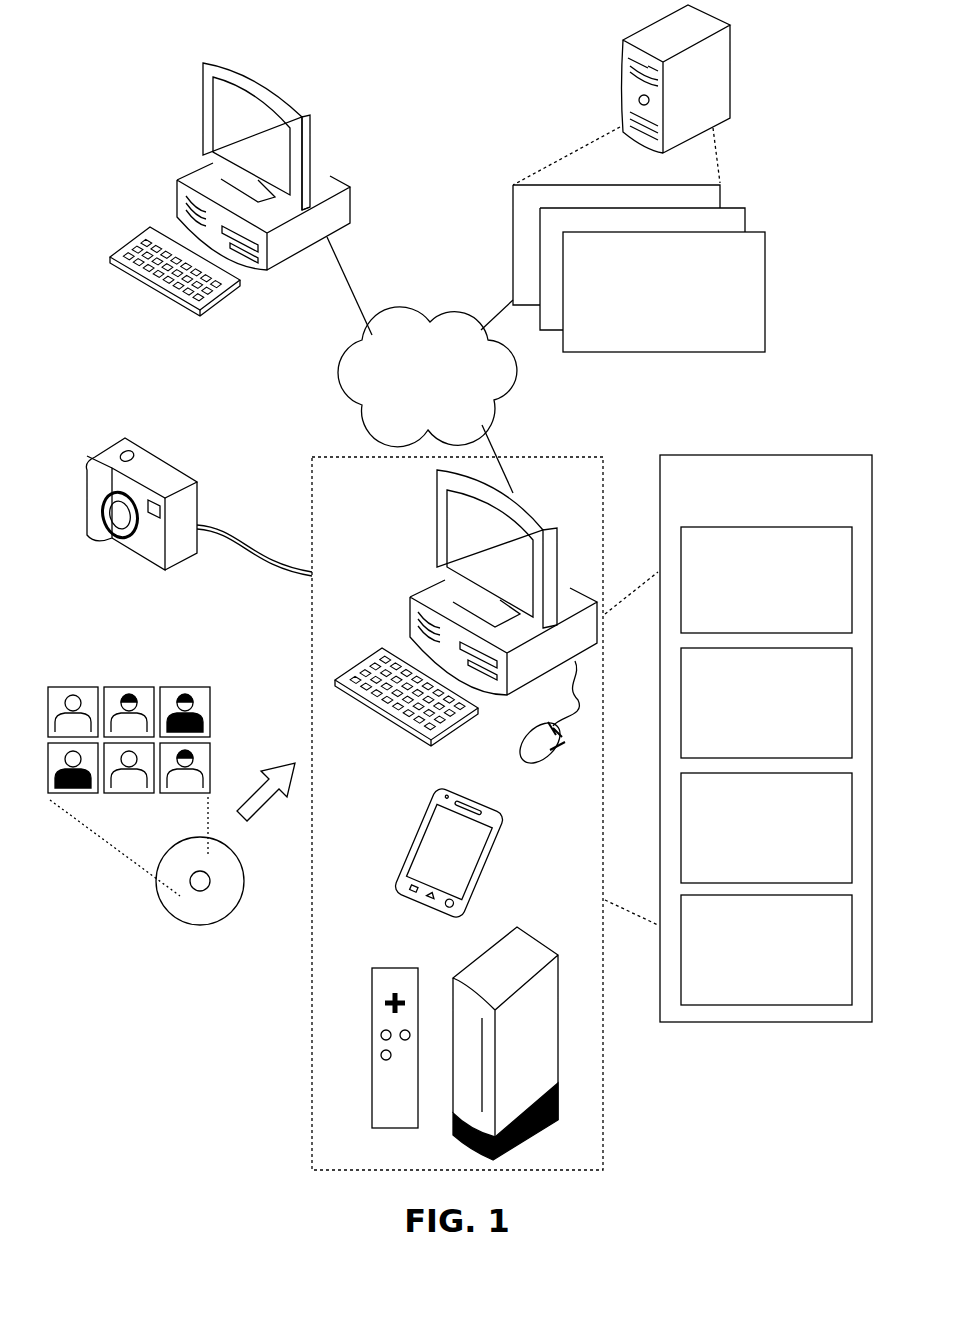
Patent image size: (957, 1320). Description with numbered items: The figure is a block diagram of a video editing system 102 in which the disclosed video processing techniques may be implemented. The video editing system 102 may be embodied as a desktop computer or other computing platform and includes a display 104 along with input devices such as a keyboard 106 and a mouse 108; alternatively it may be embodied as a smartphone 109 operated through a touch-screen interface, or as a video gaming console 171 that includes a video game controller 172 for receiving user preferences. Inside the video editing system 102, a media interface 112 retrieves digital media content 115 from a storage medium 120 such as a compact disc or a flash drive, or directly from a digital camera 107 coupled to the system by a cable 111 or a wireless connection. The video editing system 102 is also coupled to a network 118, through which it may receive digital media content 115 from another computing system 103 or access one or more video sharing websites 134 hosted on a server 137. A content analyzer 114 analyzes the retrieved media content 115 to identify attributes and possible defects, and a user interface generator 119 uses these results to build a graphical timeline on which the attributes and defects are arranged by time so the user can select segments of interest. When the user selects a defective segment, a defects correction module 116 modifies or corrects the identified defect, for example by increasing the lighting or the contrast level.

The video editing system 102 is at (766, 738).
The computing system 103 is at (204, 88).
The display 104 is at (437, 527).
The keyboard 106 is at (392, 719).
The digital camera 107 is at (105, 449).
The mouse 108 is at (518, 752).
The smartphone 109 is at (428, 812).
The cable 111 is at (228, 532).
The media interface 112 is at (766, 580).
The content analyzer 114 is at (766, 703).
The digital media content 115 is at (112, 659).
The defects correction module 116 is at (766, 828).
The network 118 is at (427, 377).
The user interface generator 119 is at (766, 950).
The storage medium 120 is at (245, 878).
The video sharing websites 134 is at (639, 268).
The server 137 is at (650, 27).
The video gaming console 171 is at (477, 961).
The video game controller 172 is at (372, 990).